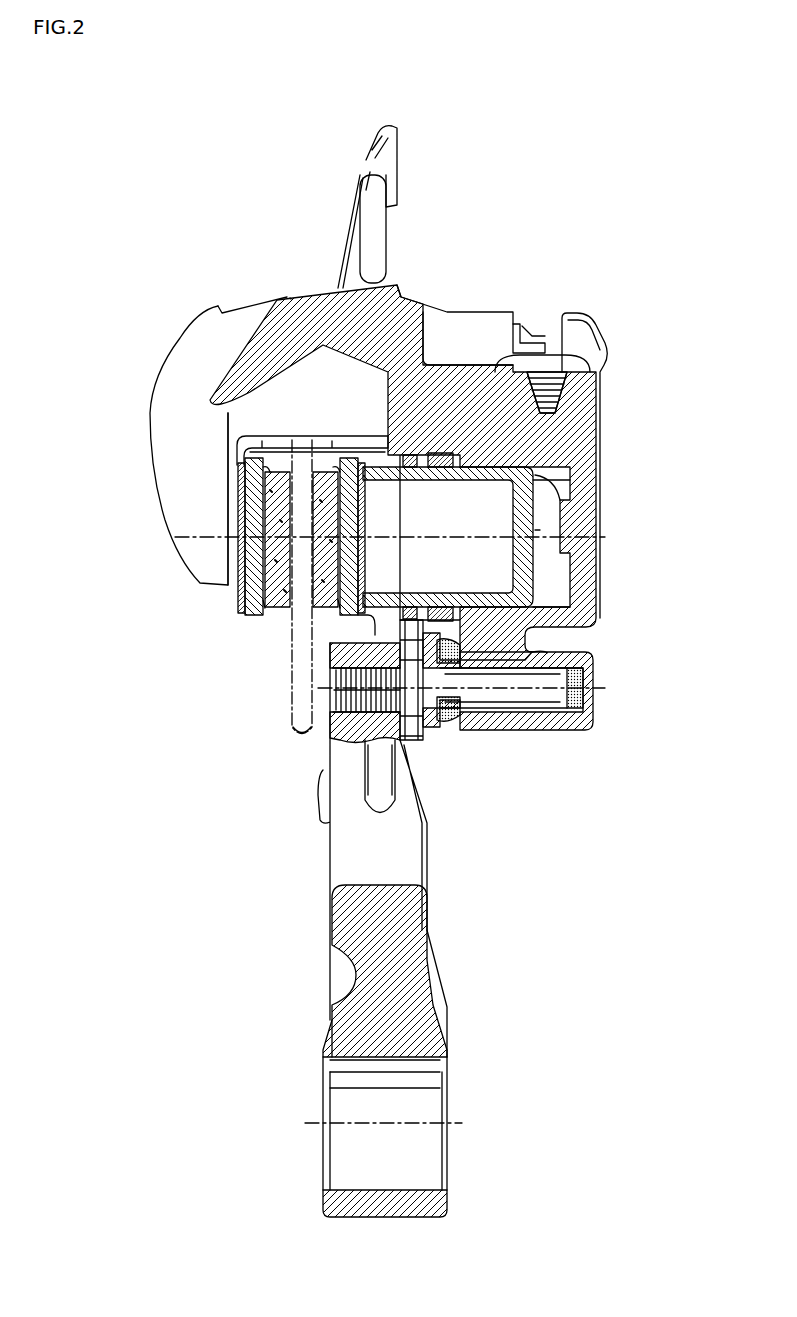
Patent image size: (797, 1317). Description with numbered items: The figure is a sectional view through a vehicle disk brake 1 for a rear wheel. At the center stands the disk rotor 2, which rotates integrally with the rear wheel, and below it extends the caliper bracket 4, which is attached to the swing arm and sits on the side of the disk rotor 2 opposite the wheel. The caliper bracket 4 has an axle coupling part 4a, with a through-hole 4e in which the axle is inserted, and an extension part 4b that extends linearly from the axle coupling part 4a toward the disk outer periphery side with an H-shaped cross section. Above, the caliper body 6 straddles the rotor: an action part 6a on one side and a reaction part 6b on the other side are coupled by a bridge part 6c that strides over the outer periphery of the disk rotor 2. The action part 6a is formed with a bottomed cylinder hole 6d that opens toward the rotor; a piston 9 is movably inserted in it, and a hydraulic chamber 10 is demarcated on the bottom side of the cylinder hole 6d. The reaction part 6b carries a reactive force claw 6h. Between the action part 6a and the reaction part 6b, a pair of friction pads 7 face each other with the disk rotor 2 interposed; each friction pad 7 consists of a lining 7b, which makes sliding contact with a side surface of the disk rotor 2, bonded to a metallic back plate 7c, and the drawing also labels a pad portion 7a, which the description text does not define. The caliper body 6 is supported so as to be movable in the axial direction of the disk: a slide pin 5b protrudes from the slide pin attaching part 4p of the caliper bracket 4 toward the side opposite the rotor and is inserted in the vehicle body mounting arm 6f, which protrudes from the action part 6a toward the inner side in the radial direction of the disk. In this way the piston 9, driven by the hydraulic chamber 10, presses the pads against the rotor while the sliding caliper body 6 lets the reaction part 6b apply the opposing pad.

The vehicle disk brake 1 is at (400, 88).
The disk rotor 2 is at (300, 688).
The caliper bracket 4 is at (387, 930).
The axle coupling part 4a is at (440, 1030).
The extension part 4b is at (345, 847).
The through-hole 4e is at (425, 1188).
The slide pin attaching part 4p is at (328, 735).
The slide pin 5b is at (500, 696).
The caliper body 6 is at (371, 455).
The action part 6a is at (598, 490).
The reaction part 6b is at (160, 413).
The bridge part 6c is at (290, 300).
The cylinder hole 6d is at (478, 467).
The vehicle body mounting arm 6f is at (518, 720).
The reactive force claw 6h is at (222, 583).
The friction pad 7 is at (283, 520).
The backing plate 7a is at (262, 620).
The lining 7b is at (242, 479).
The back plate 7c is at (250, 512).
The piston 9 is at (528, 520).
The hydraulic chamber 10 is at (552, 573).